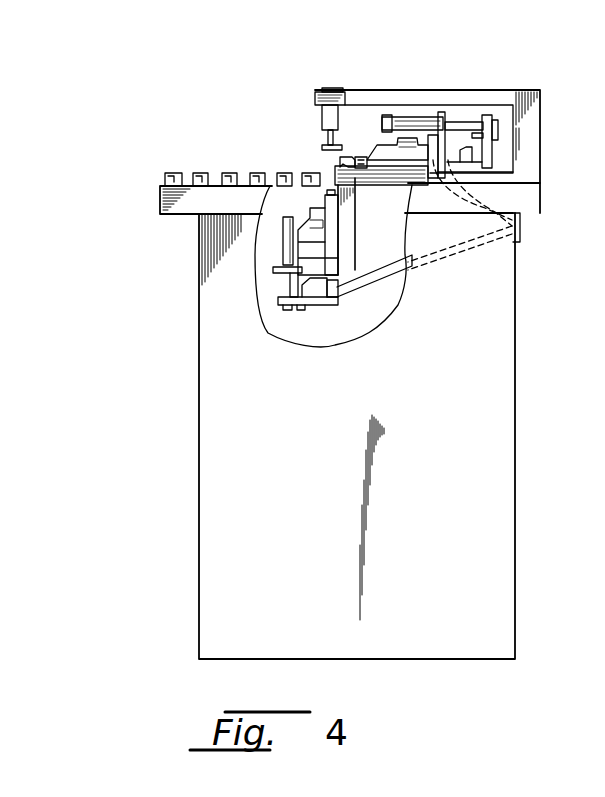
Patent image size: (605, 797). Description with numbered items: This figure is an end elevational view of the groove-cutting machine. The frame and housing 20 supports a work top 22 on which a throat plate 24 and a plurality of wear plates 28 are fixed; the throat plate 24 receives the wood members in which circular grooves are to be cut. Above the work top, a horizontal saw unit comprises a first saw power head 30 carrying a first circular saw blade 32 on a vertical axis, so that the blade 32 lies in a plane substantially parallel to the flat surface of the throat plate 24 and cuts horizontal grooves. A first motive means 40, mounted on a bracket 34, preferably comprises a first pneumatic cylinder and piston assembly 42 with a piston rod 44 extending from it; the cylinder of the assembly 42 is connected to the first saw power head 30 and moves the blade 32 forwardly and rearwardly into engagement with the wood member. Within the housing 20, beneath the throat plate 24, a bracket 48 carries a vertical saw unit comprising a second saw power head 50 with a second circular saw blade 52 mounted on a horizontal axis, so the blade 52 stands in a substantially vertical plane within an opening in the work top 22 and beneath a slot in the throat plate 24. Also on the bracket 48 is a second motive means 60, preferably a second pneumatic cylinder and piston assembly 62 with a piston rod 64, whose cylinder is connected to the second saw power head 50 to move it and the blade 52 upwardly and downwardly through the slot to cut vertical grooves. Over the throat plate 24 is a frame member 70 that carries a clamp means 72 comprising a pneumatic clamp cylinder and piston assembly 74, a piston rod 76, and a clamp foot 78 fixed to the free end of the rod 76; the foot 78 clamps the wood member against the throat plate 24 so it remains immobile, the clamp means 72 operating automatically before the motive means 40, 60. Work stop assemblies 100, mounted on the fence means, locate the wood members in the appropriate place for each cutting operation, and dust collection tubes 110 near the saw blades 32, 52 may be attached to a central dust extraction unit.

The housing 20 is at (508, 444).
The work top 22 is at (160, 200).
The throat plate 24 is at (272, 174).
The wear plates 28 is at (167, 172).
The first saw power head 30 is at (498, 138).
The first circular saw blade 32 is at (366, 157).
The bracket 34 is at (410, 195).
The first motive means 40 is at (440, 112).
The first pneumatic cylinder and piston assembly 42 is at (388, 118).
The piston rod 44 is at (460, 122).
The bracket 48 is at (357, 244).
The second saw power head 50 is at (328, 225).
The second circular saw blade 52 is at (332, 188).
The second motive means 60 is at (283, 229).
The second pneumatic cylinder and piston assembly 62 is at (283, 242).
The piston rod 64 is at (273, 268).
The frame member 70 is at (503, 92).
The clamp means 72 is at (362, 157).
The pneumatic clamp cylinder and piston assembly 74 is at (322, 118).
The piston rod 76 is at (322, 140).
The clamp foot 78 is at (322, 148).
The work stop assemblies 100 is at (340, 163).
The dust collection tubes 110 is at (470, 210).